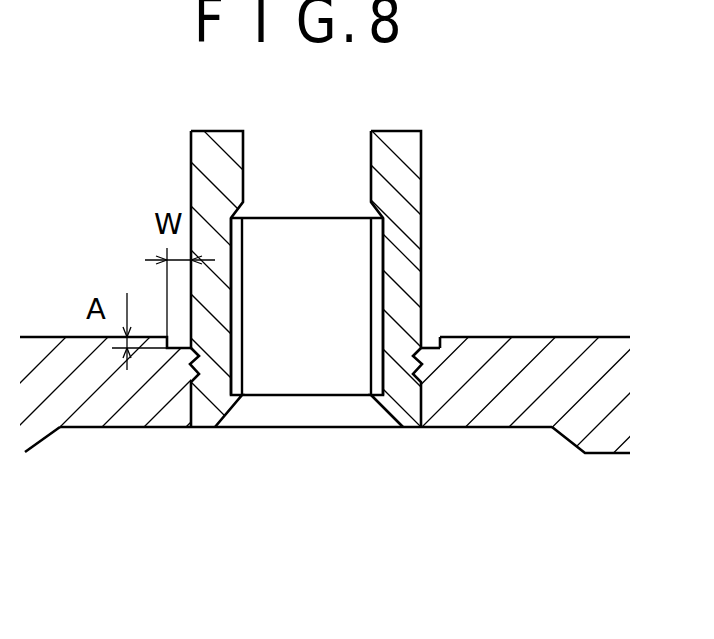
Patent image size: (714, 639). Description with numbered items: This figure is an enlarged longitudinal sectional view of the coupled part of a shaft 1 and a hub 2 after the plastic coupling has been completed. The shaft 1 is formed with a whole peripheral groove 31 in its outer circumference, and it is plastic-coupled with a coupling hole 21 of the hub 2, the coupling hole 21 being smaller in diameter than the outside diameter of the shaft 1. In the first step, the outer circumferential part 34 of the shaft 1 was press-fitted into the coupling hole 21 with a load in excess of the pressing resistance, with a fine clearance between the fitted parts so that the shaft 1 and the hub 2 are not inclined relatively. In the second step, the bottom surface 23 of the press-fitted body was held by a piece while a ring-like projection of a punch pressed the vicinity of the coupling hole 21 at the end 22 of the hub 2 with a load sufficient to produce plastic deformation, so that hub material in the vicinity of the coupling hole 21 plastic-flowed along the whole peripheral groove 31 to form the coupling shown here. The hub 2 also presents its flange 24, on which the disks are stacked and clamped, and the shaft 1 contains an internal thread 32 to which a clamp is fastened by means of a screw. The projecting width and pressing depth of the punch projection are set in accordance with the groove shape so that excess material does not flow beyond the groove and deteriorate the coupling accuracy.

The shaft 1 is at (400, 253).
The hub 2 is at (516, 398).
The coupling hole 21 is at (423, 403).
The end of the hub 22 is at (68, 337).
The bottom surface 23 is at (152, 428).
The flange 24 is at (430, 337).
The whole peripheral groove 31 is at (418, 357).
The internal thread 32 is at (231, 338).
The outer circumferential part 34 is at (193, 403).